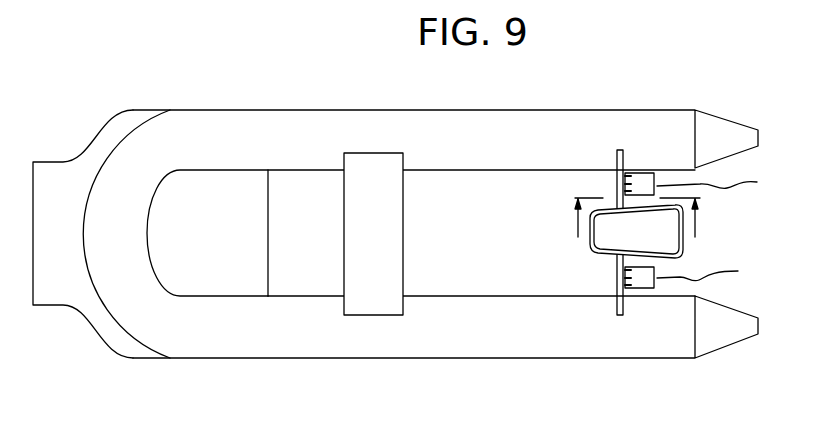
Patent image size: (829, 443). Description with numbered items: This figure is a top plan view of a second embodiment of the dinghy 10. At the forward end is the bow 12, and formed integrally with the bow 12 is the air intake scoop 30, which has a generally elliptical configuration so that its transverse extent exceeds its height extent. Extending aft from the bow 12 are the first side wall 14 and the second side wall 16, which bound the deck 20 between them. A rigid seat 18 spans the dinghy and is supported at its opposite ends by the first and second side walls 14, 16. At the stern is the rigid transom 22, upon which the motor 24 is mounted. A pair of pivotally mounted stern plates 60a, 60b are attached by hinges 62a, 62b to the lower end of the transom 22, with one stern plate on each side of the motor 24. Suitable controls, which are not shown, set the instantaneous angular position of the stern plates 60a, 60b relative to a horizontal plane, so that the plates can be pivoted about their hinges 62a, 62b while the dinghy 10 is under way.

The dinghy 10 is at (638, 230).
The bow 12 is at (120, 231).
The first side wall 14 is at (257, 315).
The second side wall 16 is at (242, 128).
The rigid seat 18 is at (390, 220).
The deck 20 is at (300, 233).
The rigid transom 22 is at (617, 157).
The motor 24 is at (656, 240).
The air intake scoop 30 is at (66, 182).
The stern plate 60a is at (731, 182).
The stern plate 60b is at (721, 272).
The hinge 62a is at (631, 185).
The hinge 62b is at (637, 283).